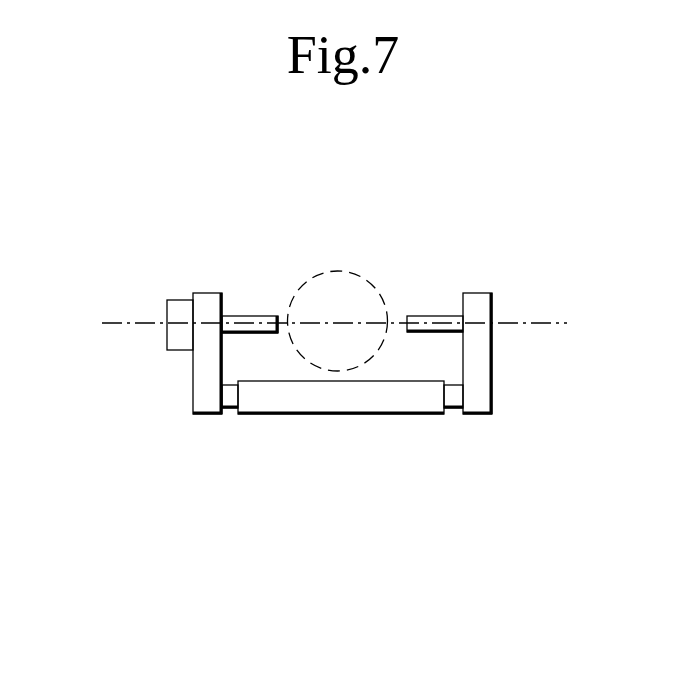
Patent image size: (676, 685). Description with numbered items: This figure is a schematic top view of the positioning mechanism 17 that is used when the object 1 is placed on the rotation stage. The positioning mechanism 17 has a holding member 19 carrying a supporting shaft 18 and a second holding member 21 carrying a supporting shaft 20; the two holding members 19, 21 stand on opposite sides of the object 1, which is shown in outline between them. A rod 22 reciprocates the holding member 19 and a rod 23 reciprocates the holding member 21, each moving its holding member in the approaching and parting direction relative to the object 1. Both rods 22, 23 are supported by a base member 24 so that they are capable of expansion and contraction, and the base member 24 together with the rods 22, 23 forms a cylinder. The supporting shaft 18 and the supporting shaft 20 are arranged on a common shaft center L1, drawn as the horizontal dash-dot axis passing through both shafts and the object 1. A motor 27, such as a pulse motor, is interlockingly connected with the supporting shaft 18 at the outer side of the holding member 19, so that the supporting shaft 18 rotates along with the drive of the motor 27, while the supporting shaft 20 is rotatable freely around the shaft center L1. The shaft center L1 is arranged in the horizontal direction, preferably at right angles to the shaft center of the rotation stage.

The object 1 is at (364, 279).
The positioning mechanism 17 is at (302, 414).
The supporting shaft 18 is at (245, 315).
The holding member 19 is at (188, 393).
The supporting shaft 20 is at (428, 316).
The holding member 21 is at (492, 374).
The rod 22 is at (229, 414).
The rod 23 is at (448, 414).
The base member 24 is at (358, 414).
The motor 27 is at (167, 307).
The shaft center L1 is at (505, 323).